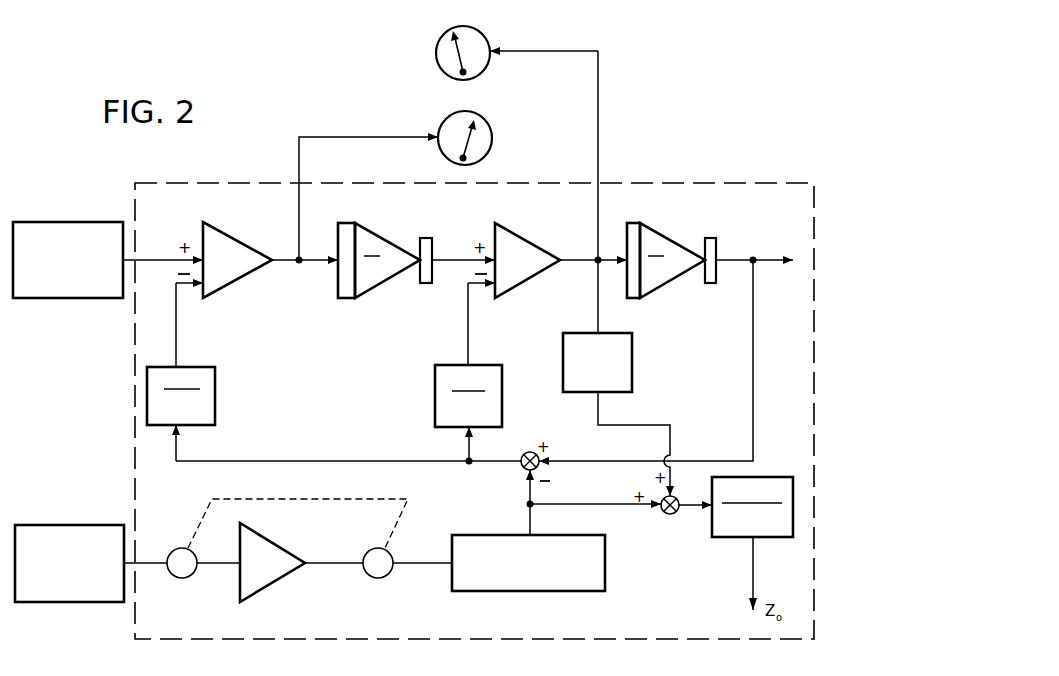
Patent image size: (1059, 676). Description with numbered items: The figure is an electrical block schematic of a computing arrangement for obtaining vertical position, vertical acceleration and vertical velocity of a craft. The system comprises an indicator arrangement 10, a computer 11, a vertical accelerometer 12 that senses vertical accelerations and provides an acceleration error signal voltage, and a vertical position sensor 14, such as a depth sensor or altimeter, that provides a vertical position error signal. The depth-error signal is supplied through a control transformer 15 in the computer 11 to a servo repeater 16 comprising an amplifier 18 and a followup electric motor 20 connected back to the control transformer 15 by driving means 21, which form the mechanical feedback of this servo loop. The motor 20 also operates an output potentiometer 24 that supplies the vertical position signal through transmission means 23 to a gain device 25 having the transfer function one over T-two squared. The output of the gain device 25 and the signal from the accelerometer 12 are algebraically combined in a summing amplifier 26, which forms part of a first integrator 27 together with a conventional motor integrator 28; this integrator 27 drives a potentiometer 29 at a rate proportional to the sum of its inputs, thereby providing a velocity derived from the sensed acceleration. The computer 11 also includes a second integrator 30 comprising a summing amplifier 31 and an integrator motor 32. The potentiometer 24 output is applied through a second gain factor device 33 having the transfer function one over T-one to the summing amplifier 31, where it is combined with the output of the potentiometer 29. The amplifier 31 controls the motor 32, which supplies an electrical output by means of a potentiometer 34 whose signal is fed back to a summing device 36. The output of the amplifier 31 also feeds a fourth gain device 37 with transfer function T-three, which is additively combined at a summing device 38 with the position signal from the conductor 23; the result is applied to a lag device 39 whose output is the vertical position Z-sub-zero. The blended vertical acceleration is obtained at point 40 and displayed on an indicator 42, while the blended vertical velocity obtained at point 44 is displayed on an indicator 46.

The indicator arrangement 10 is at (394, 91).
The computer 11 is at (187, 182).
The vertical accelerometer 12 is at (66, 298).
The vertical position sensor 14 is at (63, 525).
The control transformer 15 is at (170, 549).
The servo repeater 16 is at (458, 511).
The amplifier 18 is at (258, 538).
The followup electric motor 20 is at (390, 575).
The driving means 21 is at (328, 502).
The transmission means 23 is at (533, 521).
The output potentiometer 24 is at (538, 591).
The gain device 25 is at (215, 386).
The summing amplifier 26 is at (227, 232).
The integrator 27 is at (305, 293).
The motor integrator 28 is at (385, 283).
The potentiometer 29 is at (427, 238).
The second integrator 30 is at (580, 308).
The summing amplifier 31 is at (518, 236).
The integrator motor 32 is at (677, 279).
The second gain factor device 33 is at (502, 381).
The potentiometer 34 is at (713, 283).
The summing device 36 is at (529, 452).
The fourth gain device 37 is at (632, 351).
The summing device 38 is at (666, 514).
The lag device 39 is at (766, 537).
The point 40 is at (301, 255).
The indicator 42 is at (492, 131).
The point 44 is at (596, 255).
The indicator 46 is at (490, 38).